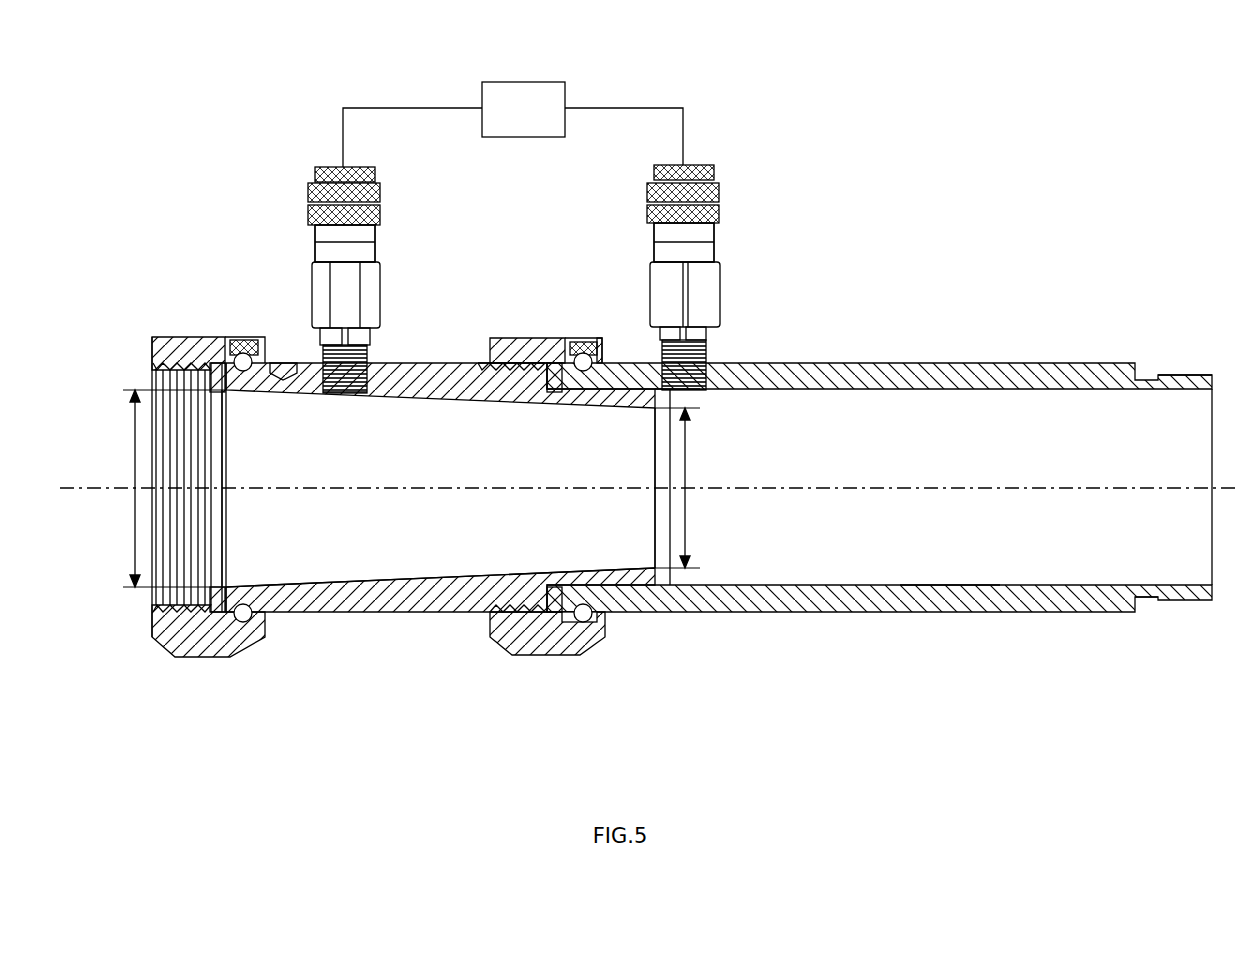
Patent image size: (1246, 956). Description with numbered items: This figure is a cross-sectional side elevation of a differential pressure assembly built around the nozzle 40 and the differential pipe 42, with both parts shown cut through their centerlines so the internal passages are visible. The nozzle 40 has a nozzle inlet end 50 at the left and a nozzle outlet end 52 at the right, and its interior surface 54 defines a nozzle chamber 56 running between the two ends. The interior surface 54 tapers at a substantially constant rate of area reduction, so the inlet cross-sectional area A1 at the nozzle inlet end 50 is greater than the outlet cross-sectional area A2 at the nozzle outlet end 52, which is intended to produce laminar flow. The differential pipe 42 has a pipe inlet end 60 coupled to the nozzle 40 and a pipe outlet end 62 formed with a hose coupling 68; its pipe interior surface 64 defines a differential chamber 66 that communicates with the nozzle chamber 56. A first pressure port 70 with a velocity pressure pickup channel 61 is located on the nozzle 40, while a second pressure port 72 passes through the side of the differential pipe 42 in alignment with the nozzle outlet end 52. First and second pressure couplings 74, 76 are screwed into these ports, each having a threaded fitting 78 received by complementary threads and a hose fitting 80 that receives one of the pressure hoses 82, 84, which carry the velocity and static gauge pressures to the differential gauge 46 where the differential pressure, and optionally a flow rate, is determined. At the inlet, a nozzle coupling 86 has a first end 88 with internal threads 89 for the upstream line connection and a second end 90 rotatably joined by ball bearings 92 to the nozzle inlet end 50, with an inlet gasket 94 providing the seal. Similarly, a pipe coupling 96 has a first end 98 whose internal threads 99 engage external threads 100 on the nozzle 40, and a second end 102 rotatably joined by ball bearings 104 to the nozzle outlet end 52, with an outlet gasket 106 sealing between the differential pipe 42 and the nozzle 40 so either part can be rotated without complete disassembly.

The nozzle 40 is at (330, 620).
The differential pipe 42 is at (960, 356).
The differential gauge 46 is at (566, 90).
The nozzle inlet end 50 is at (226, 515).
The nozzle outlet end 52 is at (664, 590).
The interior surface 54 is at (413, 575).
The nozzle chamber 56 is at (345, 530).
The pipe inlet end 60 is at (548, 362).
The velocity pressure pickup channel 61 is at (272, 395).
The pipe outlet end 62 is at (1212, 375).
The pipe interior surface 64 is at (953, 585).
The differential chamber 66 is at (957, 530).
The hose coupling 68 is at (1160, 605).
The first pressure port 70 is at (340, 394).
The second pressure port 72 is at (686, 392).
The first pressure coupling 74 is at (312, 248).
The second pressure coupling 76 is at (722, 252).
The threaded fitting 78 is at (368, 380).
The hose fitting 80 is at (375, 232).
The first pressure hose 82 is at (343, 128).
The second pressure hose 84 is at (683, 150).
The nozzle coupling 86 is at (191, 330).
The first end 88 is at (152, 342).
The internal threads 89 is at (150, 602).
The second end 90 is at (262, 345).
The ball bearings 92 is at (243, 624).
The inlet gasket 94 is at (208, 640).
The pipe coupling 96 is at (538, 330).
The first end 98 is at (489, 358).
The internal threads 99 is at (490, 606).
The external threads 100 is at (478, 366).
The second end 102 is at (606, 626).
The ball bearings 104 is at (583, 623).
The outlet gasket 106 is at (545, 640).
The inlet cross-sectional area A1 is at (133, 445).
The outlet cross-sectional area A2 is at (688, 470).